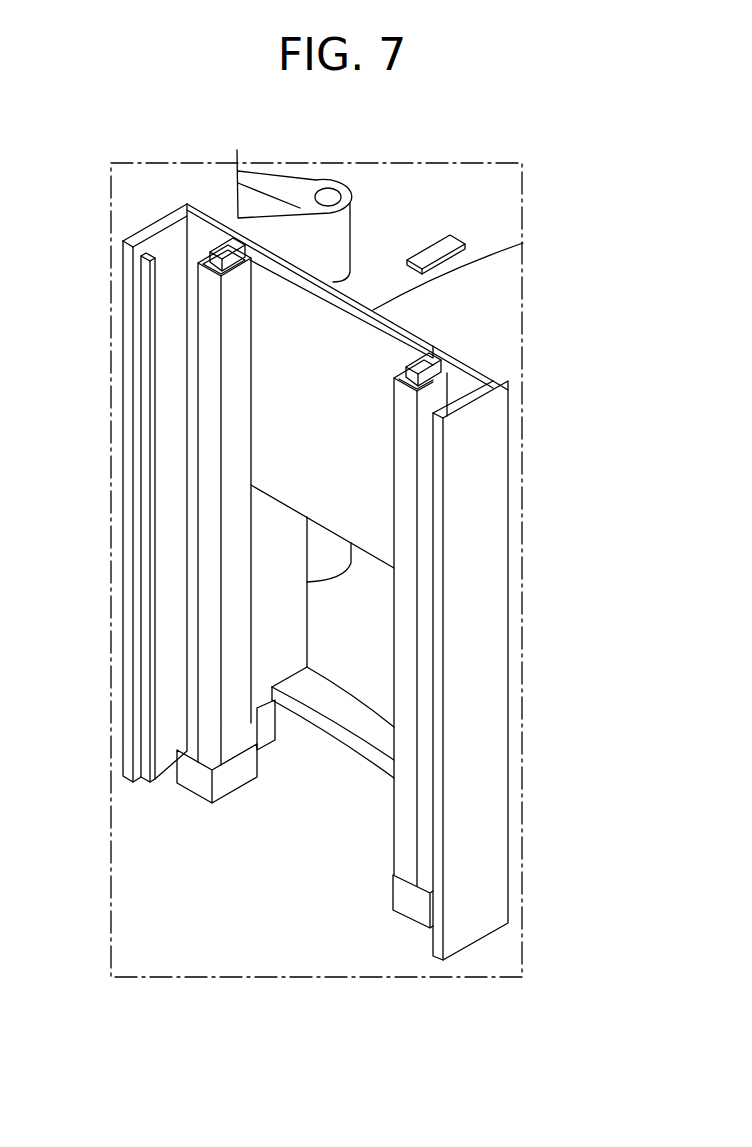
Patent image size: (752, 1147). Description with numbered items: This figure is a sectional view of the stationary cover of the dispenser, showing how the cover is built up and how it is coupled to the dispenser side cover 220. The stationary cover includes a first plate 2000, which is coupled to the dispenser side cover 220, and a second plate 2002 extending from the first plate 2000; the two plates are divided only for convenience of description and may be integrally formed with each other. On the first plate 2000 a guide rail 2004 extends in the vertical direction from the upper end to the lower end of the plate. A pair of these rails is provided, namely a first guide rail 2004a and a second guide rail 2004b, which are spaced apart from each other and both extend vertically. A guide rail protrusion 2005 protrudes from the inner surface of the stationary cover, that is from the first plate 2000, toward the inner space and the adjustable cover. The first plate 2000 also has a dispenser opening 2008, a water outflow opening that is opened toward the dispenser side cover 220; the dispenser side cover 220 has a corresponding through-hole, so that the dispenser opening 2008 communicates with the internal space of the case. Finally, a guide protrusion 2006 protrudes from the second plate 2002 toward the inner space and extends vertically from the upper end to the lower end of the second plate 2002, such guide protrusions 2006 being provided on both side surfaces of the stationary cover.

The first plate 2000 is at (338, 353).
The second plate 2002 is at (116, 451).
The guide rail 2004 is at (312, 660).
The first guide rail 2004a is at (208, 712).
The second guide rail 2004b is at (400, 835).
The guide rail protrusion 2005 is at (225, 250).
The guide protrusion 2006 is at (145, 276).
The dispenser opening 2008 is at (368, 637).
The dispenser side cover 220 is at (212, 215).